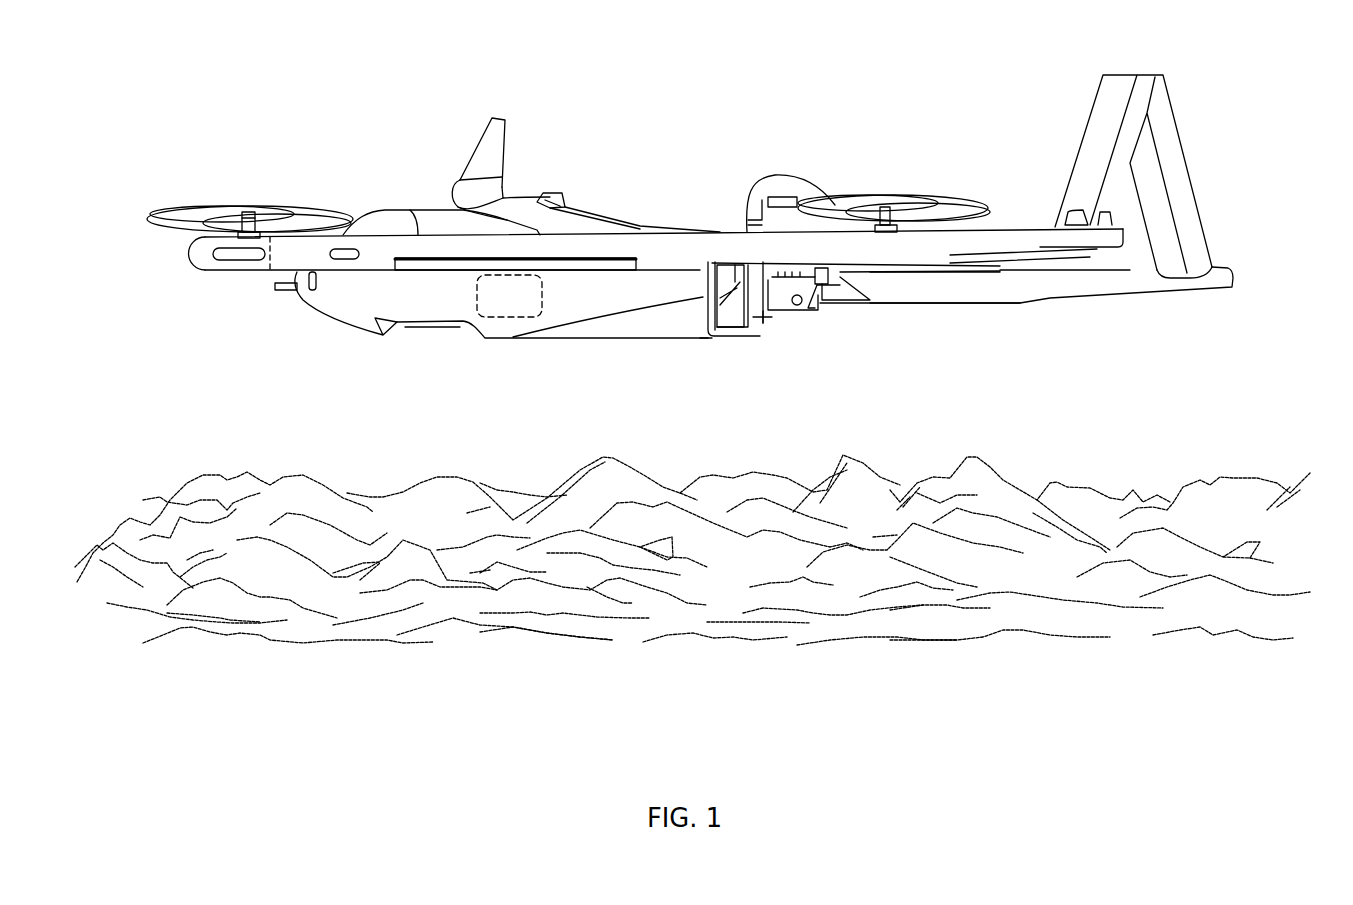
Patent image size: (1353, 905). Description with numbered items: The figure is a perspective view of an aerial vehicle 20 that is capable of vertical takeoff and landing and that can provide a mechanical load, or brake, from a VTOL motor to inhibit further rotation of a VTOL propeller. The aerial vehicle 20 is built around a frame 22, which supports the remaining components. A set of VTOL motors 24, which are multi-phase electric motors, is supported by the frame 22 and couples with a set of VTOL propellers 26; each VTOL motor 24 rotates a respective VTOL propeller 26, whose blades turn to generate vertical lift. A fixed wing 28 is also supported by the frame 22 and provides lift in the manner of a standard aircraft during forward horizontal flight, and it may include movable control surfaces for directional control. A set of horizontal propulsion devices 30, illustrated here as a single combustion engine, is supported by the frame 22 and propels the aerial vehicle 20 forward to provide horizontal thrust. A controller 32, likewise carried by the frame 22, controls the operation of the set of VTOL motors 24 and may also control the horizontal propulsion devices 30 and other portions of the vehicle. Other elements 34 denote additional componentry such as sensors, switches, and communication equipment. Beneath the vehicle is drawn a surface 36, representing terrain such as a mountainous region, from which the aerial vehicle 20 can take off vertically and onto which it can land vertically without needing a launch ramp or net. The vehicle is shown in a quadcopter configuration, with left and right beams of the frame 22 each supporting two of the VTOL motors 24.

The aerial vehicle 20 is at (330, 88).
The frame 22 is at (410, 208).
The set of VTOL motors 24 is at (255, 278).
The set of VTOL propellers 26 is at (175, 210).
The fixed wing 28 is at (505, 192).
The set of horizontal propulsion devices 30 is at (855, 326).
The controller 32 is at (519, 308).
The other elements 34 is at (491, 334).
The surface 36 is at (732, 596).